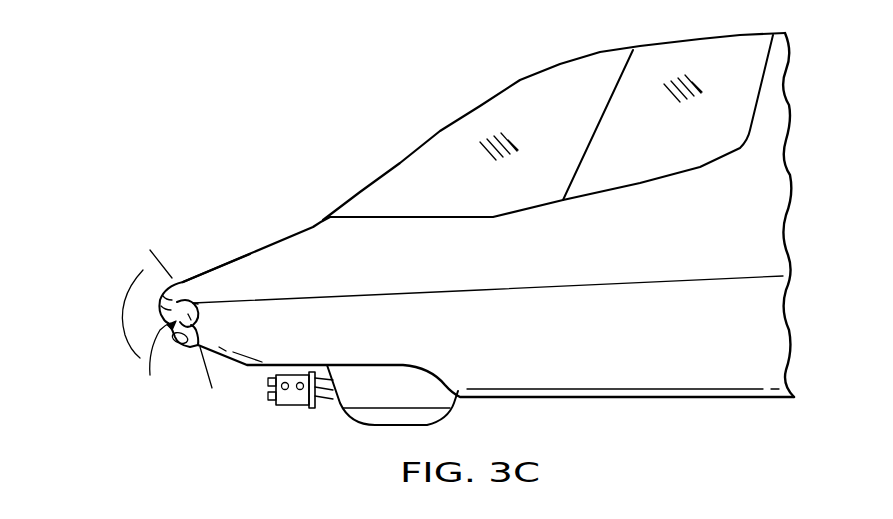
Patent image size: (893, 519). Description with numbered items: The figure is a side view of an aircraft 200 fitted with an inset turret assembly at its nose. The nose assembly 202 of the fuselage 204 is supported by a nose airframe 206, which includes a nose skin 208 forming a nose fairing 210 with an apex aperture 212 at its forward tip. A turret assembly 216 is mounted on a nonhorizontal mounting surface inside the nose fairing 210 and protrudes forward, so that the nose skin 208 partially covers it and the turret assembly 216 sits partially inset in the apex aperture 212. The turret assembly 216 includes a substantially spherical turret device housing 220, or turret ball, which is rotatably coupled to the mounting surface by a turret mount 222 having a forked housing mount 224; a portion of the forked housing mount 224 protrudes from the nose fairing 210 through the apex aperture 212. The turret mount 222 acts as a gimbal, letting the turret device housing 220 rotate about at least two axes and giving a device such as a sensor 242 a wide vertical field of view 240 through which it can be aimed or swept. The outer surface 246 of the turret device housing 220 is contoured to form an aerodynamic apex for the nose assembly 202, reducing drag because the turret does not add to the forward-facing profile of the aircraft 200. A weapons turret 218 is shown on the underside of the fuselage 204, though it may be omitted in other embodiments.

The aircraft 200 is at (335, 130).
The nose assembly 202 is at (256, 210).
The fuselage 204 is at (680, 399).
The nose airframe 206 is at (256, 210).
The nose skin 208 is at (277, 252).
The nose fairing 210 is at (227, 263).
The apex aperture 212 is at (178, 283).
The turret assembly 216 is at (162, 307).
The weapons turret 218 is at (363, 425).
The turret device housing 220 is at (160, 313).
The turret mount 222 is at (173, 344).
The forked housing mount 224 is at (198, 311).
The vertical field of view 240 is at (120, 352).
The sensor 242 is at (194, 378).
The outer surface 246 is at (146, 263).